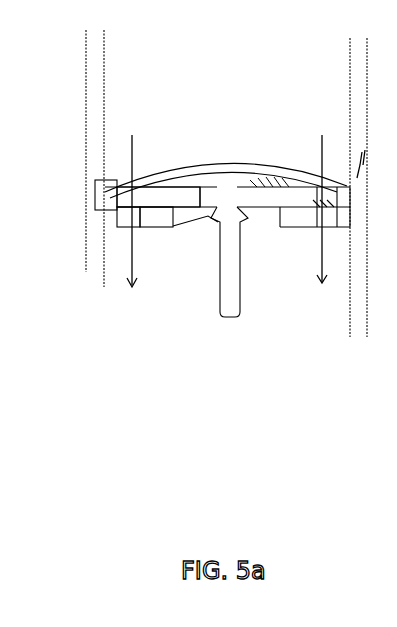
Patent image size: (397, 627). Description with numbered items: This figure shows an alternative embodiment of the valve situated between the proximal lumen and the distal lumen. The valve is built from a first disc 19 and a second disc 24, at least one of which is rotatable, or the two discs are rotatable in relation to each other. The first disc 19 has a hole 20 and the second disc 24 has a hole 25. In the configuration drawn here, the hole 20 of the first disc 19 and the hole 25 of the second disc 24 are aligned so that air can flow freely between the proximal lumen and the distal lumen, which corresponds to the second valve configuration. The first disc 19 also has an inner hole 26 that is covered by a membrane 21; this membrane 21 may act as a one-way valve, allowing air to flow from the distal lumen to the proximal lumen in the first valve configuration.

The first disc 19 is at (109, 197).
The hole 20 is at (134, 189).
The membrane 21 is at (229, 171).
The second disc 24 is at (105, 221).
The hole 25 is at (124, 223).
The inner hole 26 is at (185, 191).